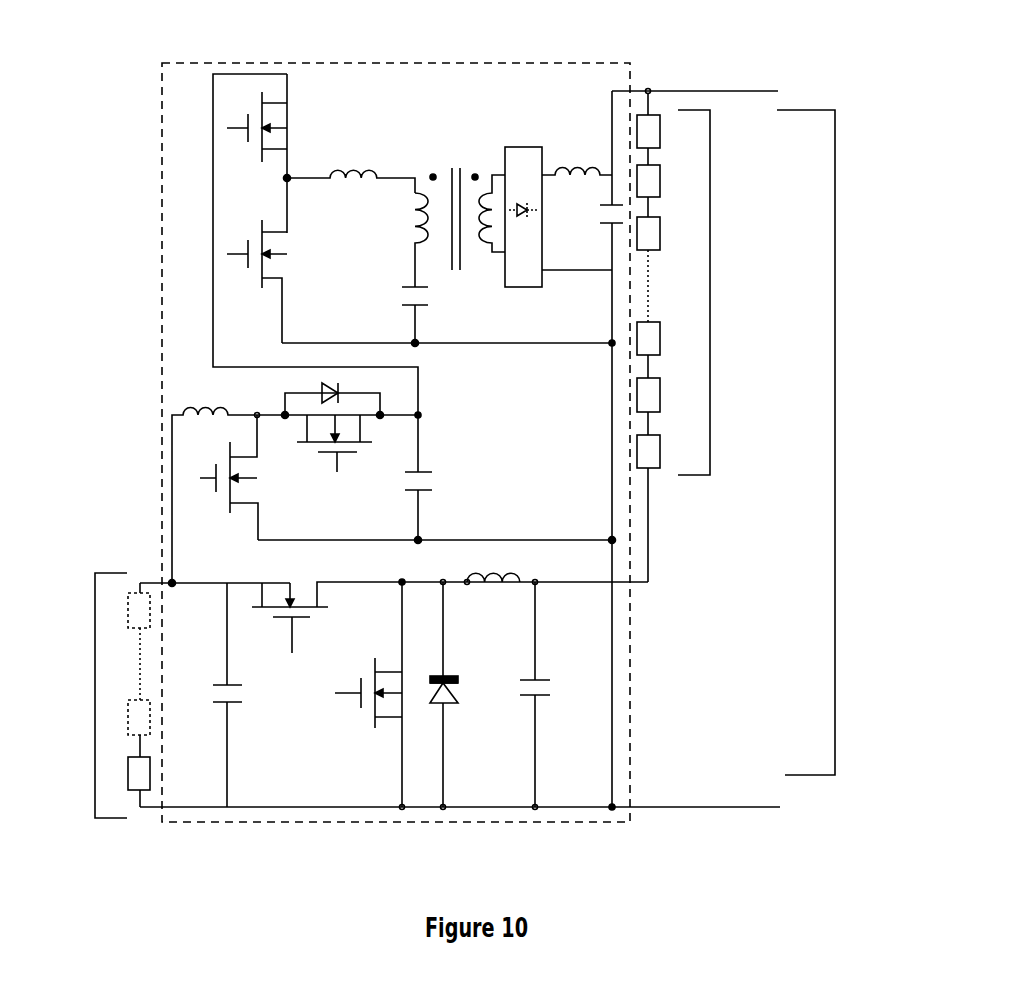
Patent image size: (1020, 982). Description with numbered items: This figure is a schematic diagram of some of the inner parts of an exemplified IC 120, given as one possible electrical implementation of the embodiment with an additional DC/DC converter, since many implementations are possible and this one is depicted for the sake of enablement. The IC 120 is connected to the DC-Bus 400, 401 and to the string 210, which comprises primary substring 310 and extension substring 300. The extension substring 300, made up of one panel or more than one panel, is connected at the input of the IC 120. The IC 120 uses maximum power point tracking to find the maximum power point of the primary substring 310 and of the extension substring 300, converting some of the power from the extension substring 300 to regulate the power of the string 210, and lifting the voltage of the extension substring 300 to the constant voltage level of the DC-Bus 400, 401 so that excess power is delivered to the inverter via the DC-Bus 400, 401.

The IC 120 is at (160, 177).
The string 210 is at (835, 445).
The extension substring 300 is at (95, 693).
The primary substring 310 is at (710, 298).
The DC-Bus 400 is at (700, 88).
The DC-Bus 401 is at (717, 812).